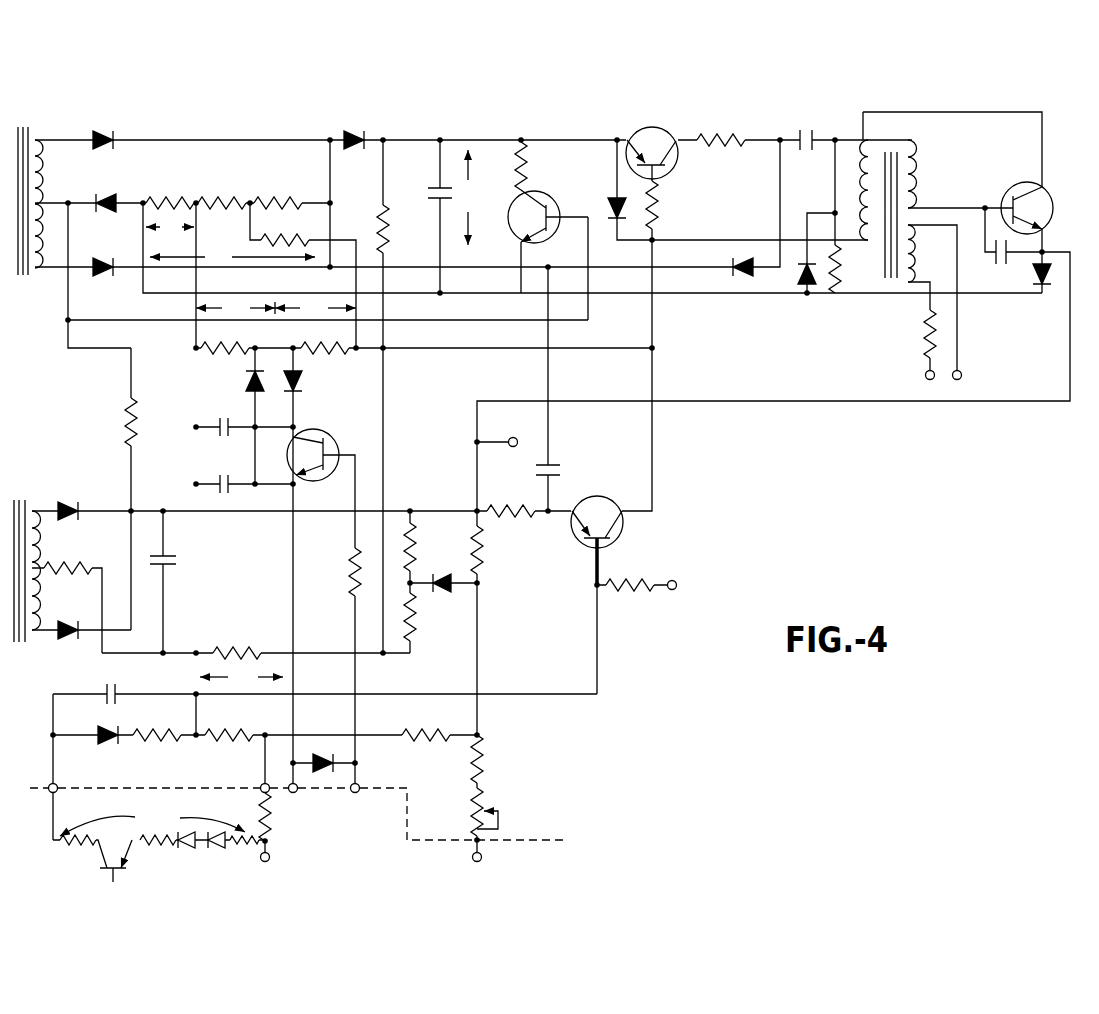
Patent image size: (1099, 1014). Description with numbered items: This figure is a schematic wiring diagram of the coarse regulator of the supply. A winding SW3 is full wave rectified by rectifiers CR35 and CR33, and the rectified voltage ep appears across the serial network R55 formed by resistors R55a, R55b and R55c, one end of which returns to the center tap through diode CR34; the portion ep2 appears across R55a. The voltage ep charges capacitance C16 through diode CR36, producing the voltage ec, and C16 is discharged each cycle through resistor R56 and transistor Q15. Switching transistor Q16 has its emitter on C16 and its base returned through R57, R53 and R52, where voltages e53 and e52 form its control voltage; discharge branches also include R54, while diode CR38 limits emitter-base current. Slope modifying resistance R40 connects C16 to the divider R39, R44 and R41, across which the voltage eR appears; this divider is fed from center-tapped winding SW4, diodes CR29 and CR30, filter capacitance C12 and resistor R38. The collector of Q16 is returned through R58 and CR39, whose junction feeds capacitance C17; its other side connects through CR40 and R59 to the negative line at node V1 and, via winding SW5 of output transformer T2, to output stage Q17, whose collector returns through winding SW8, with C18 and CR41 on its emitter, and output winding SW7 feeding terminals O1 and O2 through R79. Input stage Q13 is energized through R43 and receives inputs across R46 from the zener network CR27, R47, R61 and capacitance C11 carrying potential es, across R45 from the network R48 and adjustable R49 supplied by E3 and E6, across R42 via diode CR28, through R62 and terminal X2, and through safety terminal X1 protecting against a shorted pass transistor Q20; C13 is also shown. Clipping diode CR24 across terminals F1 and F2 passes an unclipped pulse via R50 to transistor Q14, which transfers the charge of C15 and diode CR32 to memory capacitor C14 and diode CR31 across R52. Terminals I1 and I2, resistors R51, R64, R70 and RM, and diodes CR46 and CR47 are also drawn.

The winding SW3 is at (41, 190).
The rectifier CR35 is at (123, 131).
The diode CR36 is at (364, 129).
The diode CR34 is at (119, 191).
The rectifier CR33 is at (110, 254).
The resistor R55a is at (170, 193).
The resistor R55b is at (222, 193).
The resistor R55c is at (278, 193).
The serial resistor network R55 is at (224, 223).
The resistor R54 is at (285, 232).
The voltage across R55a ep2 is at (170, 228).
The full wave rectified voltage ep is at (232, 258).
The voltage across R52 e52 is at (235, 308).
The voltage across R53 e53 is at (315, 308).
The resistor R52 is at (225, 340).
The resistor R53 is at (325, 340).
The resistor R51 is at (147, 422).
The diode CR31 is at (239, 378).
The diode CR32 is at (315, 380).
The capacitance C15 is at (228, 438).
The memory capacitor C14 is at (236, 493).
The npn transistor Q14 is at (326, 449).
The rectifier diode CR30 is at (74, 501).
The filter capacitance C12 is at (156, 548).
The resistor R38 is at (68, 556).
The center-tapped winding SW4 is at (39, 588).
The rectifier diode CR29 is at (60, 643).
The resistor R39 is at (237, 641).
The voltage across R39 eR is at (241, 678).
The capacitance C11 is at (125, 688).
The zener diode CR27 is at (104, 749).
The resistance R47 is at (157, 724).
The resistance R46 is at (229, 724).
The terminal I1 is at (39, 779).
The terminal I2 is at (256, 779).
The terminal F1 is at (298, 801).
The terminal F2 is at (358, 801).
The clipping diode CR24 is at (318, 755).
The resistance R61 is at (279, 817).
The reference potential terminal E3 is at (286, 867).
The resistor R64 is at (76, 852).
The pass transistor Q20 is at (136, 866).
The resistor R70 is at (158, 852).
The diode CR46 is at (186, 833).
The diode CR47 is at (214, 848).
The resistor RM is at (244, 847).
The potential es'' es is at (152, 817).
The resistor R50 is at (341, 572).
The resistor R41 is at (424, 547).
The resistance R42 is at (494, 550).
The resistance R43 is at (511, 501).
The diode CR28 is at (444, 594).
The resistor R44 is at (423, 618).
The terminal X1 is at (520, 431).
The capacitance C13 is at (560, 472).
The input stage Q13 is at (614, 522).
The resistance R62 is at (630, 575).
The terminal X2 is at (687, 601).
The resistance R45 is at (426, 725).
The resistance R48 is at (492, 759).
The adjustable resistance R49 is at (463, 812).
The reference potential terminal E6 is at (488, 865).
The resistance R40 is at (401, 229).
The capacitance C16 is at (430, 181).
The voltage across C16 ec is at (468, 197).
The resistor R56 is at (508, 168).
The npn transistor Q15 is at (541, 212).
The diode CR38 is at (607, 198).
The switching stage transistor Q16 is at (653, 144).
The resistor R57 is at (666, 205).
The resistor R58 is at (721, 130).
The capacitance C17 is at (810, 127).
The circuit node V1 is at (690, 287).
The diode CR39 is at (754, 257).
The diode CR40 is at (818, 298).
The resistor R59 is at (848, 269).
The output transformer T2 is at (882, 150).
The winding SW8 is at (866, 190).
The winding SW5 is at (914, 183).
The output winding SW7 is at (930, 253).
The output stage Q17 is at (1039, 200).
The capacitance C18 is at (1000, 264).
The diode CR41 is at (1046, 290).
The resistor R79 is at (915, 334).
The output terminal O1 is at (925, 378).
The output terminal O2 is at (970, 366).